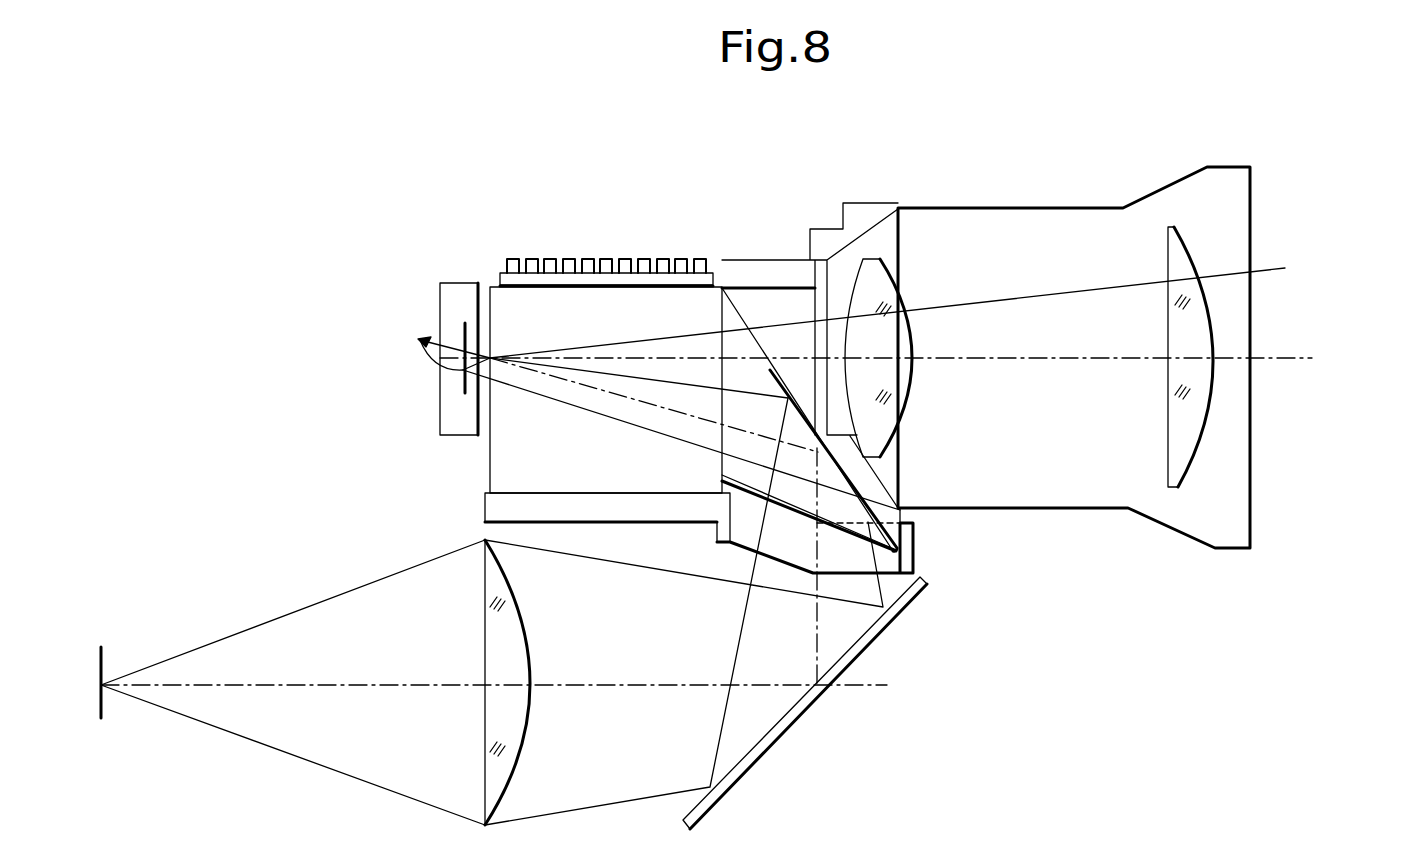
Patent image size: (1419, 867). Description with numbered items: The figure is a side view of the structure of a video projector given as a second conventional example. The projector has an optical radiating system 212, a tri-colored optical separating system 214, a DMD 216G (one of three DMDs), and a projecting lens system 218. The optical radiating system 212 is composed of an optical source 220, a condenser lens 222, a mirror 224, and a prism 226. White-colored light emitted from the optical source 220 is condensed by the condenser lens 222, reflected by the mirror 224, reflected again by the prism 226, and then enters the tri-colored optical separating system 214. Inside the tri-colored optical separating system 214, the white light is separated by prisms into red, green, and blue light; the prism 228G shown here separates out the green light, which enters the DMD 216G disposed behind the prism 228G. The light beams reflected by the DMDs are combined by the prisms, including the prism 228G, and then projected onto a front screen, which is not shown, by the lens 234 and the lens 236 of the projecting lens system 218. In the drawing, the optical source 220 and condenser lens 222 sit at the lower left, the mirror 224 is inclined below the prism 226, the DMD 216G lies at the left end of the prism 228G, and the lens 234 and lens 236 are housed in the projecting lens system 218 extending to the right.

The projecting lens system 218 is at (1071, 186).
The lens 236 is at (1193, 262).
The lens 234 is at (908, 382).
The prism 226 is at (880, 487).
The tri-colored optical separating system 214 is at (496, 270).
The DMD 216G is at (429, 298).
The prism 228G is at (503, 458).
The optical source 220 is at (98, 662).
The condenser lens 222 is at (500, 795).
The mirror 224 is at (820, 700).
The optical radiating system 212 is at (604, 629).